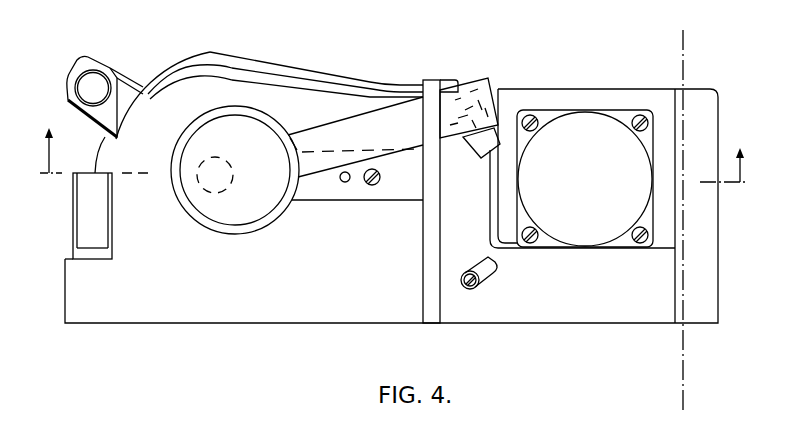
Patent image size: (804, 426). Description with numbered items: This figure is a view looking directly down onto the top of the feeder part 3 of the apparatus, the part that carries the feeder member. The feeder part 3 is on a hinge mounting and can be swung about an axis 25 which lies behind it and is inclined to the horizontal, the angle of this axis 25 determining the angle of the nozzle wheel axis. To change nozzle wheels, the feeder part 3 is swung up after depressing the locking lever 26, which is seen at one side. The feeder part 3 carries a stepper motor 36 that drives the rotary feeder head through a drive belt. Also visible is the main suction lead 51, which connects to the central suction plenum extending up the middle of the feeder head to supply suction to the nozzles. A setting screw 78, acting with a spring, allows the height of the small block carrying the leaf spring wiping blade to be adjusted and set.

The feeder part 3 is at (100, 325).
The axis 25 is at (683, 53).
The locking lever 26 is at (93, 228).
The stepper motor 36 is at (585, 140).
The main suction lead 51 is at (377, 130).
The setting screw 78 is at (99, 82).